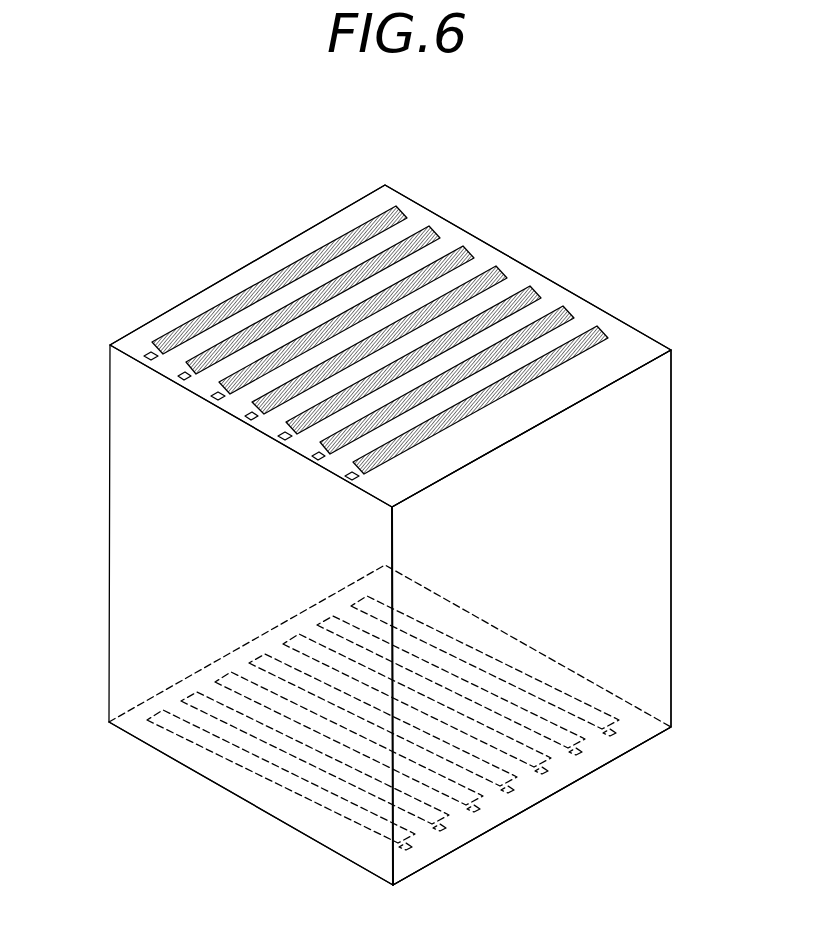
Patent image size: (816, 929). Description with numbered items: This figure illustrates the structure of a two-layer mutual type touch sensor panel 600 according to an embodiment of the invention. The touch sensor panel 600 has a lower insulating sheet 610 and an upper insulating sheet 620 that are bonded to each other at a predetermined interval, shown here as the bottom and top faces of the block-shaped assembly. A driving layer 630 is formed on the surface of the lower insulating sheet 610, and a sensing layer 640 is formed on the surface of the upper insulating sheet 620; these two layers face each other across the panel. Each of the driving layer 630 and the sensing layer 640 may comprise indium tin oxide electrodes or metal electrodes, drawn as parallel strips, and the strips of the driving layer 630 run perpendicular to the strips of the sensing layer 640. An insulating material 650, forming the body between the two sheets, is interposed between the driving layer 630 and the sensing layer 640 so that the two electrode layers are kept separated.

The touch sensor panel 600 is at (617, 136).
The lower insulating sheet 610 is at (566, 668).
The upper insulating sheet 620 is at (632, 331).
The driving layer 630 is at (199, 689).
The sensing layer 640 is at (208, 317).
The insulating material 650 is at (637, 499).